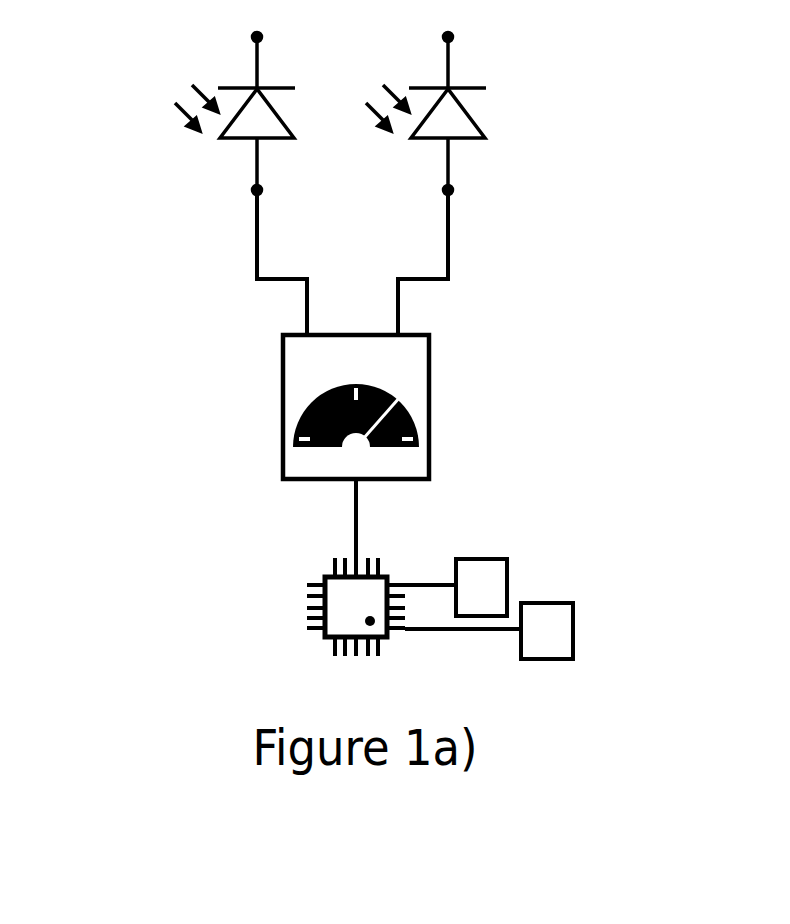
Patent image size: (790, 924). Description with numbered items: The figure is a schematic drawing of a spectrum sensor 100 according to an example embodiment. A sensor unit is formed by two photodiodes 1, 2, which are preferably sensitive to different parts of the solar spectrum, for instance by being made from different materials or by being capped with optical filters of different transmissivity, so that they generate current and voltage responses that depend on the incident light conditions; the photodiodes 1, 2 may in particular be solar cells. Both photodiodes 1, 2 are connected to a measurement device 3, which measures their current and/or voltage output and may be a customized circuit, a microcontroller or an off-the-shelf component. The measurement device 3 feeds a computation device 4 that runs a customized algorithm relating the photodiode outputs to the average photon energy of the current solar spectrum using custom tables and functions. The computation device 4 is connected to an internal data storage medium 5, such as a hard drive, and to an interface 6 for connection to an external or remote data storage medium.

The photodiode 1 is at (158, 120).
The photodiode 2 is at (498, 108).
The measurement device 3 is at (255, 443).
The computation device 4 is at (298, 610).
The internal data storage medium 5 is at (517, 573).
The interface 6 is at (583, 630).
The spectrum sensor 100 is at (552, 174).